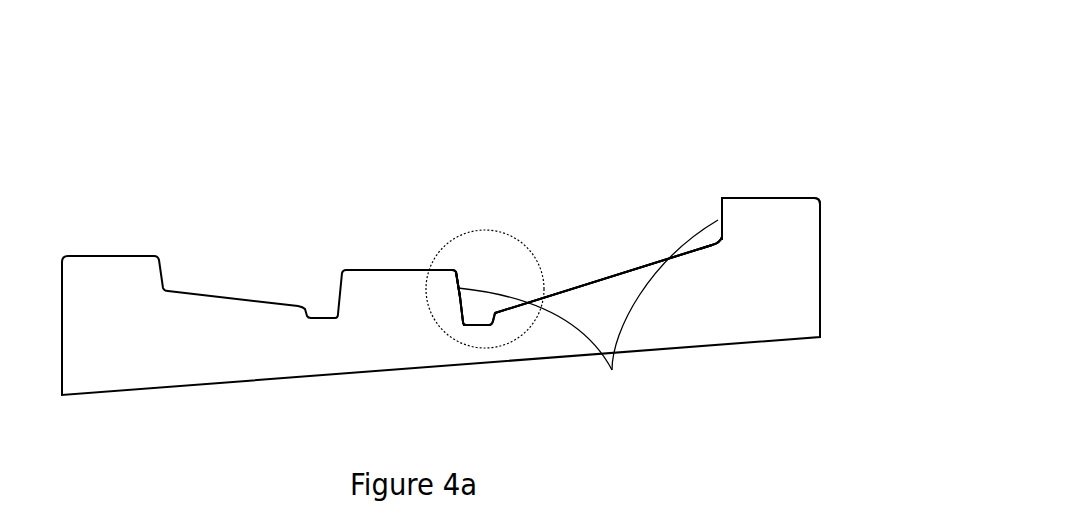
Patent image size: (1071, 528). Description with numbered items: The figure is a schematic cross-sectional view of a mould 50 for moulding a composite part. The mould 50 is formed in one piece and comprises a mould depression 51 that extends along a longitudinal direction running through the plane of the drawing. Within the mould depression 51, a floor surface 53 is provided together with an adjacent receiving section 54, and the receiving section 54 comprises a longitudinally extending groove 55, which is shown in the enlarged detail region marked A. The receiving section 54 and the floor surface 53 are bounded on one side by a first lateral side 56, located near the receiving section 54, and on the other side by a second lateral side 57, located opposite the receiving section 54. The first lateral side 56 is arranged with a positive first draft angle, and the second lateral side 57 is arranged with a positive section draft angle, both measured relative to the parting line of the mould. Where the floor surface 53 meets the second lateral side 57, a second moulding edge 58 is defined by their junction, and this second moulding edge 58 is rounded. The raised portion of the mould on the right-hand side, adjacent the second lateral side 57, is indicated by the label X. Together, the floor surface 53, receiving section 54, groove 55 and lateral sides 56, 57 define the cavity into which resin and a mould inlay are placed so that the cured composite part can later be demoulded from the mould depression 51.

The mould 50 is at (238, 173).
The mould depression 51 is at (590, 235).
The floor surface 53 is at (635, 267).
The receiving section 54 is at (490, 283).
The groove 55 is at (483, 325).
The first lateral side 56 is at (462, 297).
The second lateral side 57 is at (720, 213).
The second moulding edge 58 is at (718, 228).
The rib / block X is at (778, 195).
The detail region A is at (485, 270).